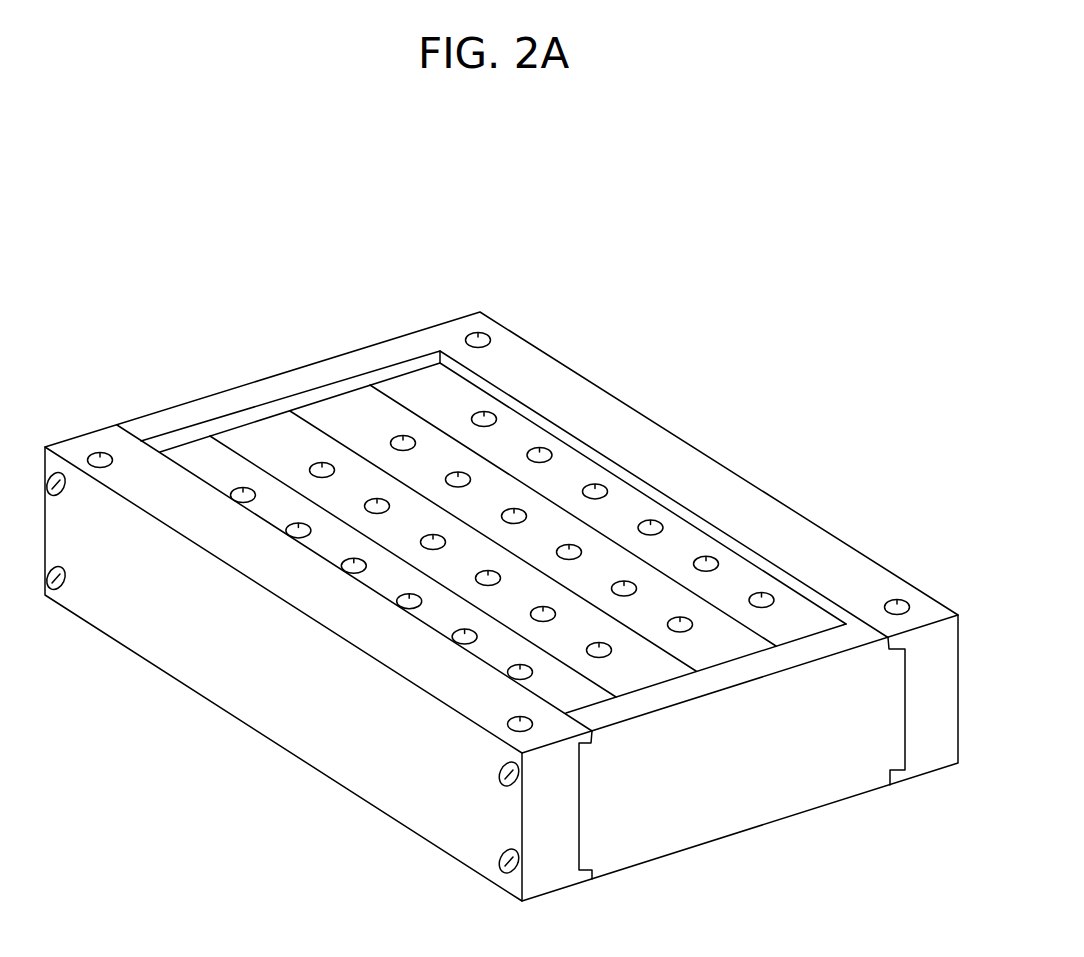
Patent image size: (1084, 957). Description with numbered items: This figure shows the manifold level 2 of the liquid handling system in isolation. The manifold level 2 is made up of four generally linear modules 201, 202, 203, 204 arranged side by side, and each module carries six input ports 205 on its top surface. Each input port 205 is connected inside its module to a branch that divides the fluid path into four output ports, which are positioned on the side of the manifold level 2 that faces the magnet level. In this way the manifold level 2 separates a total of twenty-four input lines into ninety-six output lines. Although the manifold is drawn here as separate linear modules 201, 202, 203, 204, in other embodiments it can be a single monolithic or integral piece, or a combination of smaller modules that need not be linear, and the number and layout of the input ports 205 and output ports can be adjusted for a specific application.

The manifold level 2 is at (702, 223).
The linear module 201 is at (193, 453).
The linear module 202 is at (263, 430).
The linear module 203 is at (343, 410).
The linear module 204 is at (410, 383).
The input ports 205 is at (491, 412).